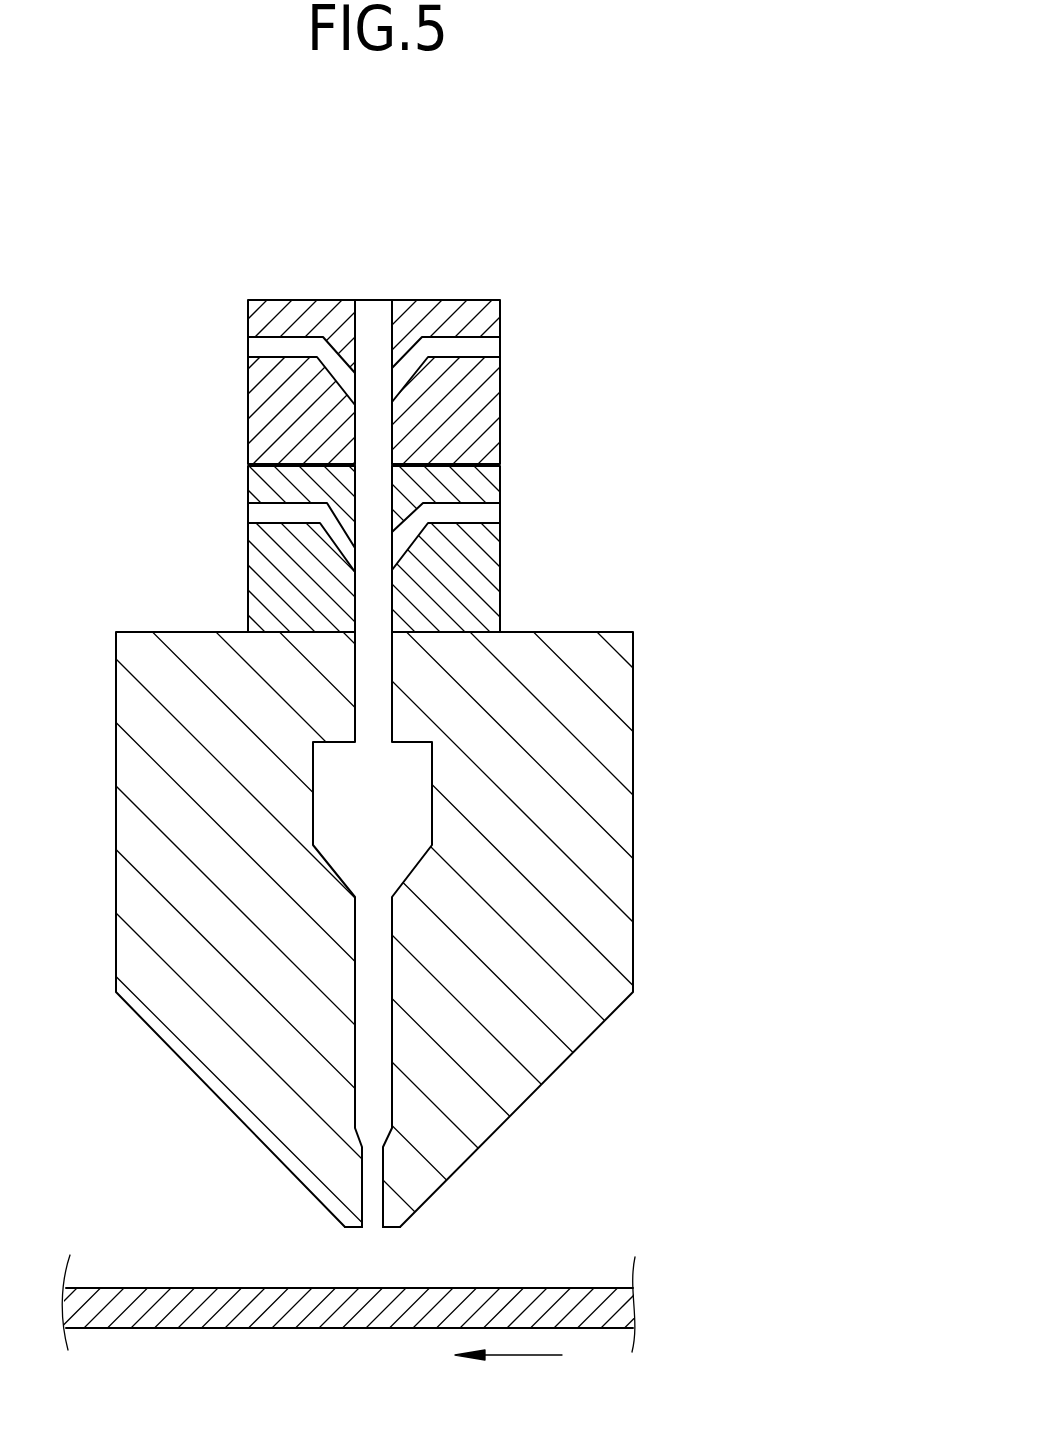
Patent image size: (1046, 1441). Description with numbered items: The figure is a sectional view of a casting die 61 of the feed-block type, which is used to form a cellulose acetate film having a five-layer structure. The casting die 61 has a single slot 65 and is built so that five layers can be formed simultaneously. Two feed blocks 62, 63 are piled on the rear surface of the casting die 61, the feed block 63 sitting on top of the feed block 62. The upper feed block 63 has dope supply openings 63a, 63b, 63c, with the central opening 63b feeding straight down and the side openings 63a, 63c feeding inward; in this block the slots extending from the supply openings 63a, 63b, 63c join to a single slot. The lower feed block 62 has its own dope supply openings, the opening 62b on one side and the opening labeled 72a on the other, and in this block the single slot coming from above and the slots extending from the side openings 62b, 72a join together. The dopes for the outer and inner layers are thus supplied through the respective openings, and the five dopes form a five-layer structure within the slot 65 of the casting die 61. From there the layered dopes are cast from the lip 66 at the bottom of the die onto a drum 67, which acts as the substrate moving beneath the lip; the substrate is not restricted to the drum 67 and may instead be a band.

The casting die 61 is at (758, 482).
The feed block 62 is at (500, 563).
The dope supply opening 62b is at (248, 512).
The feed block 63 is at (500, 420).
The dope supply opening 63a is at (500, 342).
The dope supply opening 63b is at (377, 300).
The dope supply opening 63c is at (250, 344).
The slot 65 is at (382, 688).
The lip 66 is at (373, 1233).
The drum 67 is at (537, 1287).
The supply passage 72a is at (500, 512).